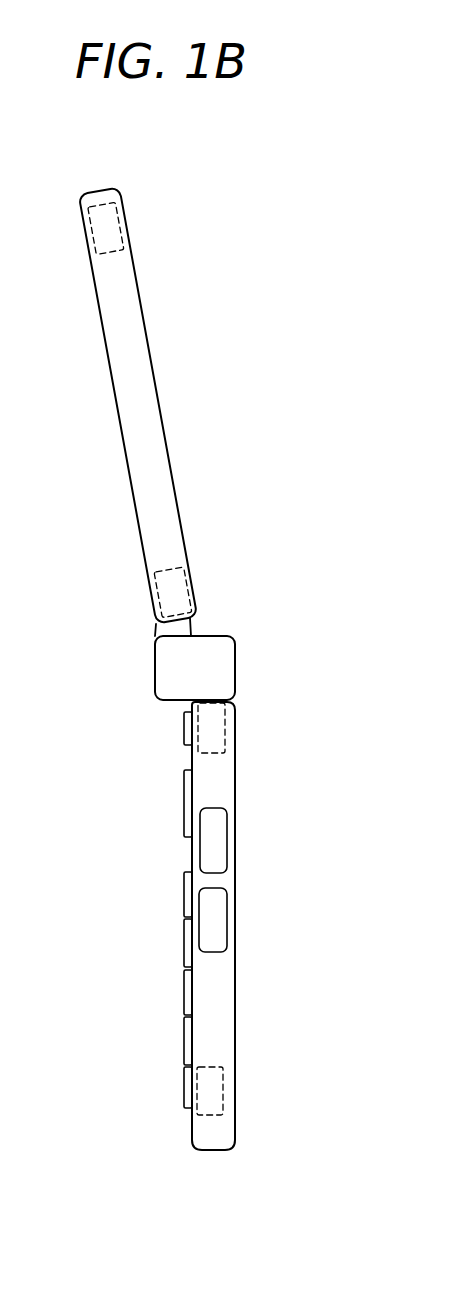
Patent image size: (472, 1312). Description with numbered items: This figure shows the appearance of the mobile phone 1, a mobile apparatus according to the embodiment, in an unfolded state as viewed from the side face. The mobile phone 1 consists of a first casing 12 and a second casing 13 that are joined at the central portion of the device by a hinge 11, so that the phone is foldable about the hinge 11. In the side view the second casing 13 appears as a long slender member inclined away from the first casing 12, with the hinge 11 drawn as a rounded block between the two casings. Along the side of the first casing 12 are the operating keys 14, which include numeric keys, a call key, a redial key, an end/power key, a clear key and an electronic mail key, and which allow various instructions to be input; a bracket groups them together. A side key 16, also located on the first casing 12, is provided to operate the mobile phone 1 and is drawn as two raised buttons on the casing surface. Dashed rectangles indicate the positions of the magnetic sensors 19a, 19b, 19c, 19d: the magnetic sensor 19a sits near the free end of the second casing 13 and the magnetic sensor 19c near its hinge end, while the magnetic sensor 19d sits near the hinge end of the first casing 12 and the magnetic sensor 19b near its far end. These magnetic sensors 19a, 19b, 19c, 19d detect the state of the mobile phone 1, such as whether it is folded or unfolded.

The mobile phone 1 is at (279, 985).
The hinge 11 is at (235, 668).
The first casing 12 is at (235, 785).
The second casing 13 is at (160, 402).
The operating keys 14 is at (178, 728).
The side key 16 is at (228, 841).
The magnetic sensor 19a is at (124, 229).
The magnetic sensor 19b is at (224, 1090).
The magnetic sensor 19c is at (196, 590).
The magnetic sensor 19d is at (227, 729).